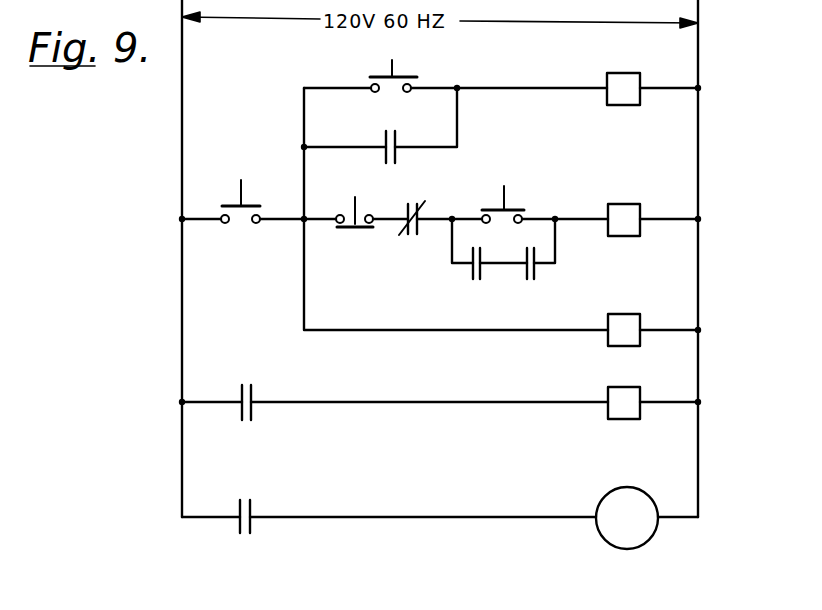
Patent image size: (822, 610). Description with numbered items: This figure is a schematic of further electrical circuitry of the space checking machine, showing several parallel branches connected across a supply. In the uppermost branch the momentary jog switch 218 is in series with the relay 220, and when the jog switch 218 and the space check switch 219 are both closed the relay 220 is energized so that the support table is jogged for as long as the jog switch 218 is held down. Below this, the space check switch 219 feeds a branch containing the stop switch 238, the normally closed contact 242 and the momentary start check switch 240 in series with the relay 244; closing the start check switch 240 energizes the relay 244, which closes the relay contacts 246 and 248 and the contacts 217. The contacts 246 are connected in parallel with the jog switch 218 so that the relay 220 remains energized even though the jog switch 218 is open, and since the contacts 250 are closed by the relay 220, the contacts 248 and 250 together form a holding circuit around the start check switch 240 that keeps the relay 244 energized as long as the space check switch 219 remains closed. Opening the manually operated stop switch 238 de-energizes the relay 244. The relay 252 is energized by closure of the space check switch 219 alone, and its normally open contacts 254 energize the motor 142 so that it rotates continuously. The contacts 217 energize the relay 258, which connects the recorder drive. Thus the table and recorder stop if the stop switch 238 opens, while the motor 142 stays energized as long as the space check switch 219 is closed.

The motor 142 is at (597, 502).
The contacts 217 is at (258, 367).
The jog switch 218 is at (405, 75).
The space check switch 219 is at (204, 215).
The relay 220 is at (608, 78).
The stop switch 238 is at (338, 213).
The start check switch 240 is at (522, 207).
The normally closed contact 242 is at (404, 217).
The relay 244 is at (634, 212).
The relay contacts 246 is at (385, 138).
The relay contacts 248 is at (477, 282).
The contacts 250 is at (528, 281).
The relay 252 is at (634, 318).
The normally open contacts 254 is at (256, 483).
The relay 258 is at (634, 400).